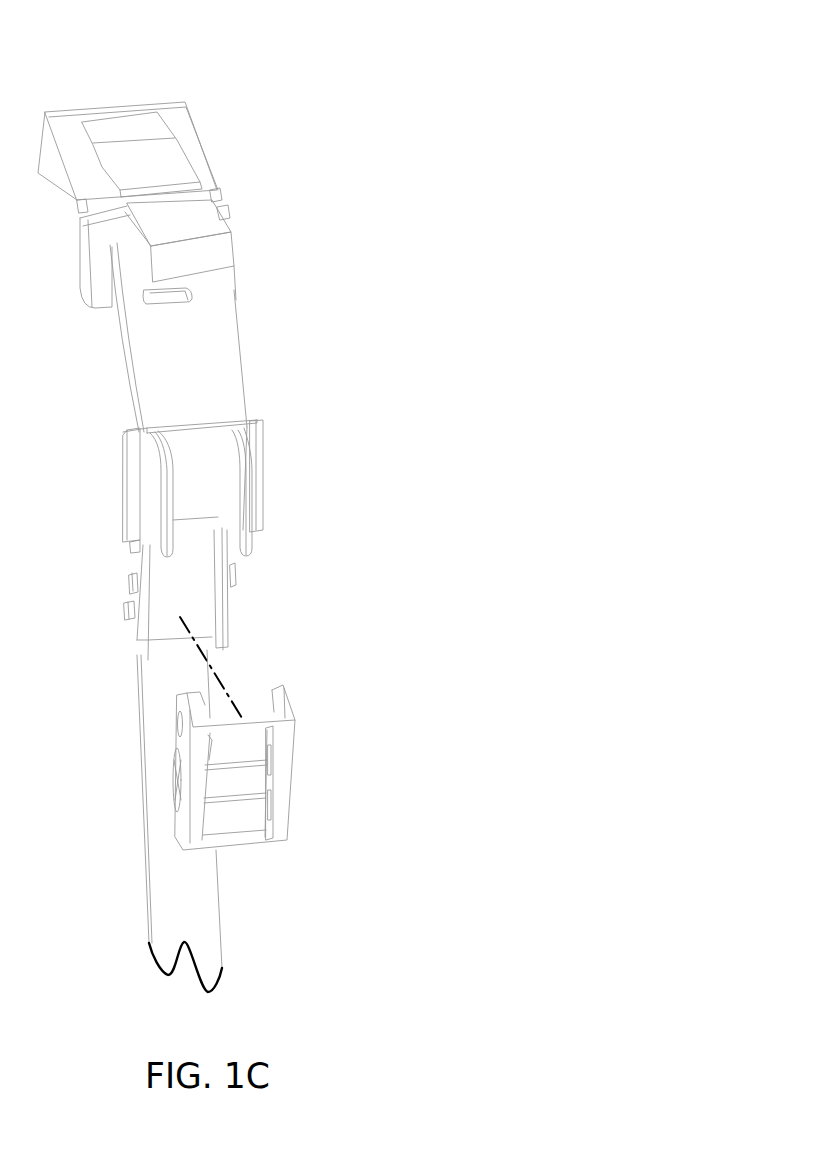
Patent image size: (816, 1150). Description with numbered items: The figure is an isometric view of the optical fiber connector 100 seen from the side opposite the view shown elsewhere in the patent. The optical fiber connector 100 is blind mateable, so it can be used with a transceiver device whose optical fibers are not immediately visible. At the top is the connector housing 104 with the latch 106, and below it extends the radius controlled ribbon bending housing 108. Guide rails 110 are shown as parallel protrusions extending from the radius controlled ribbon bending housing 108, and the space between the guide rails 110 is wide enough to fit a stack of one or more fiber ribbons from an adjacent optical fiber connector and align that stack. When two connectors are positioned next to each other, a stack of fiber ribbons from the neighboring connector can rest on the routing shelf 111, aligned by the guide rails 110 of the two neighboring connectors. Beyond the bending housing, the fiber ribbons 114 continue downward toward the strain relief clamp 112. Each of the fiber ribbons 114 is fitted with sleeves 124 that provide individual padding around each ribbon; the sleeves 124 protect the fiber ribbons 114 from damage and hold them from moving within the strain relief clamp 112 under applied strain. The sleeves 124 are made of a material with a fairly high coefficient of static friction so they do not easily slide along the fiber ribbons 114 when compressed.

The optical fiber connector 100 is at (378, 80).
The connector housing 104 is at (201, 134).
The latch 106 is at (232, 247).
The radius controlled ribbon bending housing 108 is at (246, 351).
The guide rails 110 is at (173, 510).
The routing shelf 111 is at (123, 470).
The sleeves 124 is at (200, 609).
The fiber ribbons 114 is at (143, 781).
The strain relief clamp 112 is at (257, 843).